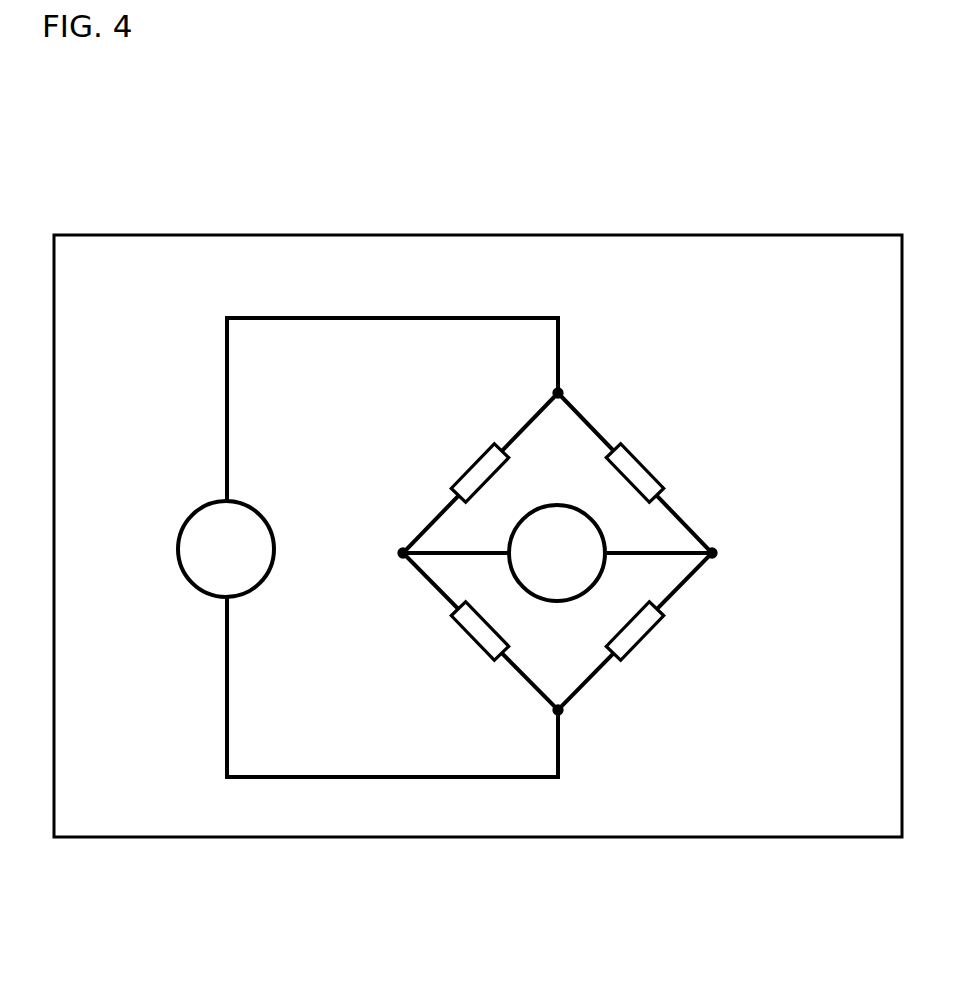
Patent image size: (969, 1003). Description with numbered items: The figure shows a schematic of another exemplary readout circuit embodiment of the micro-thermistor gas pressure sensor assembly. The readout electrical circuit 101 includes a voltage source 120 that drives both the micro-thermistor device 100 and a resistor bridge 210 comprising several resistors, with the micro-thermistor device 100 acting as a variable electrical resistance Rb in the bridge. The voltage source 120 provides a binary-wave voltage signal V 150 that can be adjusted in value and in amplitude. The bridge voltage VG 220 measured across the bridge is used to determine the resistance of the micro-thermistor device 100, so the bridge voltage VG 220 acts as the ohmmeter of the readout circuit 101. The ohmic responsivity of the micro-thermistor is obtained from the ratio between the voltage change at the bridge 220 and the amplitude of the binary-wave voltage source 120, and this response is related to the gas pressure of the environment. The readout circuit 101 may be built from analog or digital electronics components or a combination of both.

The suspended platform micro-thermistor sensor device 100 is at (678, 623).
The readout electrical circuit 101 is at (398, 233).
The binary-wave voltage source 120 is at (310, 547).
The binary-wave voltage signal V 150 is at (207, 538).
The resistor bridge 210 is at (627, 494).
The bridge voltage VG 220 is at (610, 532).